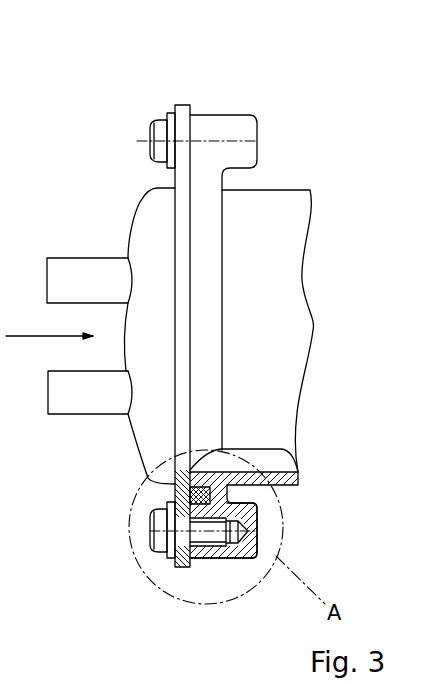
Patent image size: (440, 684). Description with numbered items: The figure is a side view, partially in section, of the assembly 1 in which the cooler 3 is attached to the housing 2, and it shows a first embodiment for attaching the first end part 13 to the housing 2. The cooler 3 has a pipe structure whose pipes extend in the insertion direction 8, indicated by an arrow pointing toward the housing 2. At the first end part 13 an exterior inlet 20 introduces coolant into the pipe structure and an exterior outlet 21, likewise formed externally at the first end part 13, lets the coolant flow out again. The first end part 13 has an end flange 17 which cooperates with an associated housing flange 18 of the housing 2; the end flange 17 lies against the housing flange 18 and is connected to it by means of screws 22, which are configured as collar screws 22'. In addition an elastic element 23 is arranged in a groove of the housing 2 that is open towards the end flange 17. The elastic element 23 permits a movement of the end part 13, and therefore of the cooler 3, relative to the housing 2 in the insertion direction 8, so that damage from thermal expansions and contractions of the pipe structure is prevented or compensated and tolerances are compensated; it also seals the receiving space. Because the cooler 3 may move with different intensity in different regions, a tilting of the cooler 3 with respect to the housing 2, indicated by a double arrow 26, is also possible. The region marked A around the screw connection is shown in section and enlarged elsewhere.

The assembly 1 is at (239, 318).
The housing 2 is at (288, 186).
The cooler 3 is at (153, 185).
The insertion direction 8 is at (24, 336).
The first end part 13 is at (111, 322).
The end flange 17 is at (175, 562).
The housing flange 18 is at (227, 560).
The inlet 20 is at (83, 265).
The outlet 21 is at (87, 405).
The screw 22 is at (152, 531).
The collar screw 22' is at (158, 530).
The elastic element 23 is at (172, 492).
The double arrow 26 is at (439, 339).